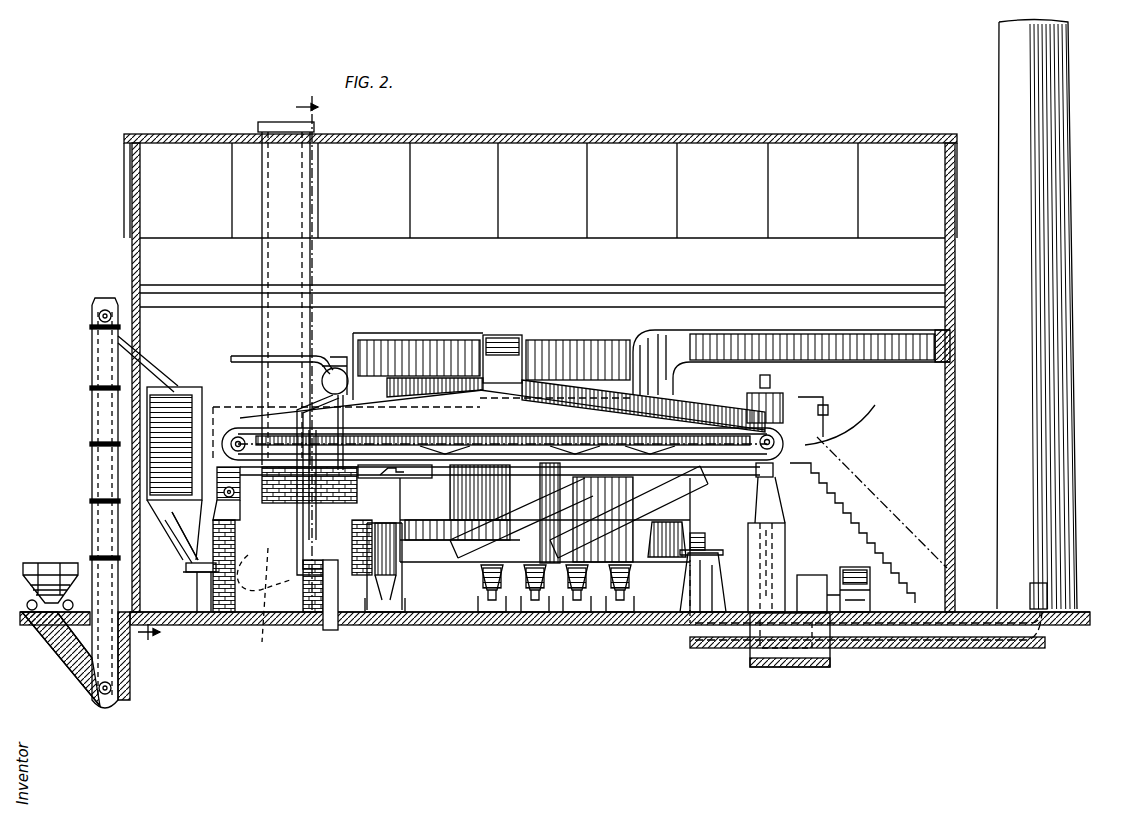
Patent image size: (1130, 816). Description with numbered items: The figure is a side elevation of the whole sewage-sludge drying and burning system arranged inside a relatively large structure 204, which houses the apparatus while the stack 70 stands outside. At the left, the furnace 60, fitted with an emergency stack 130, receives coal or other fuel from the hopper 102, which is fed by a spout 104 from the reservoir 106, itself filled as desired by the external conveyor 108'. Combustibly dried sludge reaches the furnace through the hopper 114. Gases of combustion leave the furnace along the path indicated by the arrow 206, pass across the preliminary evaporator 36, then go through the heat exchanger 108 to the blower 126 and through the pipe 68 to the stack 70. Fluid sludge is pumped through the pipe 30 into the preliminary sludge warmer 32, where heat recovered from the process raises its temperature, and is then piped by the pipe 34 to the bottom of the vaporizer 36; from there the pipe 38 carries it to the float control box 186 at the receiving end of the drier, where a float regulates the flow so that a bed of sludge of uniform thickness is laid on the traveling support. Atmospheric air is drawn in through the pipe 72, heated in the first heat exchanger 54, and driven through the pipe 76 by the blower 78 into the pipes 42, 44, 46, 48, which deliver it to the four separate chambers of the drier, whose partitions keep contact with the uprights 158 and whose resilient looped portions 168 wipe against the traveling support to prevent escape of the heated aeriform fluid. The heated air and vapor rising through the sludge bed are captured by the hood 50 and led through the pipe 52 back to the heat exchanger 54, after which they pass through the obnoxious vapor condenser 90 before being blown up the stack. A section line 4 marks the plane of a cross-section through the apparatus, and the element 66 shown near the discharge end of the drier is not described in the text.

The section line 4- 4 is at (228, 371).
The pipe 30 is at (234, 355).
The preliminary heat exchanger 32 is at (336, 368).
The pipe 34 is at (331, 630).
The preliminary evaporator 36 is at (338, 548).
The pipe 38 is at (370, 420).
The pipe 42 is at (652, 432).
The pipe 44 is at (572, 432).
The pipe 46 is at (439, 432).
The pipe 48 is at (311, 432).
The hood 50 is at (527, 392).
The pipe 52 is at (506, 352).
The first heat exchanger 54 is at (560, 383).
The furnace 60 is at (222, 522).
The supporting column 66 is at (777, 508).
The pipe 68 is at (690, 600).
The stack 70 is at (1060, 536).
The pipe 72 is at (840, 331).
The pipe 76 is at (482, 586).
The blower 78 is at (494, 612).
The obnoxious vapor condenser 90 is at (785, 397).
The hopper 102 is at (185, 573).
The spout 104 is at (184, 552).
The reservoir 106 is at (200, 400).
The heat exchanger 108 is at (634, 512).
The external conveyor 108' is at (114, 503).
The hopper 114 is at (218, 505).
The blower 126 is at (705, 547).
The emergency stack 130 is at (298, 165).
The uprights 158 is at (820, 453).
The looped portions 168 is at (1050, 588).
The box-like device 186 is at (826, 400).
The structure 204 is at (836, 133).
The arrow 206 is at (555, 627).